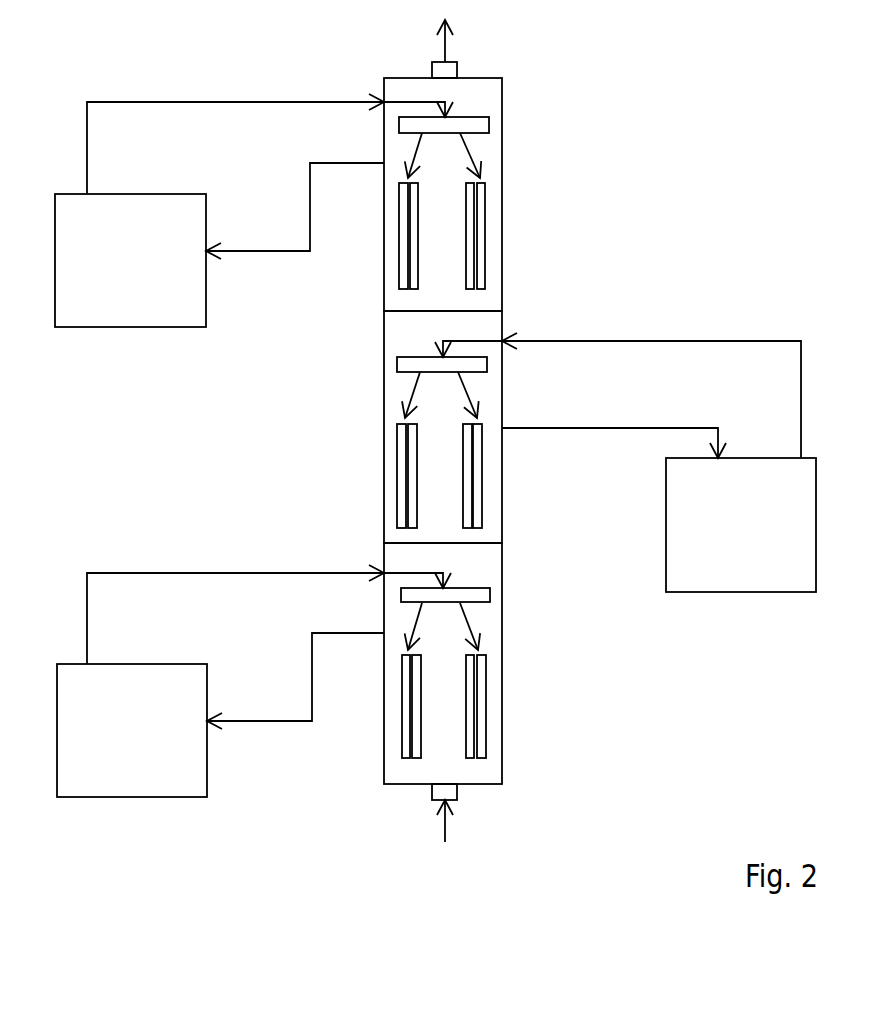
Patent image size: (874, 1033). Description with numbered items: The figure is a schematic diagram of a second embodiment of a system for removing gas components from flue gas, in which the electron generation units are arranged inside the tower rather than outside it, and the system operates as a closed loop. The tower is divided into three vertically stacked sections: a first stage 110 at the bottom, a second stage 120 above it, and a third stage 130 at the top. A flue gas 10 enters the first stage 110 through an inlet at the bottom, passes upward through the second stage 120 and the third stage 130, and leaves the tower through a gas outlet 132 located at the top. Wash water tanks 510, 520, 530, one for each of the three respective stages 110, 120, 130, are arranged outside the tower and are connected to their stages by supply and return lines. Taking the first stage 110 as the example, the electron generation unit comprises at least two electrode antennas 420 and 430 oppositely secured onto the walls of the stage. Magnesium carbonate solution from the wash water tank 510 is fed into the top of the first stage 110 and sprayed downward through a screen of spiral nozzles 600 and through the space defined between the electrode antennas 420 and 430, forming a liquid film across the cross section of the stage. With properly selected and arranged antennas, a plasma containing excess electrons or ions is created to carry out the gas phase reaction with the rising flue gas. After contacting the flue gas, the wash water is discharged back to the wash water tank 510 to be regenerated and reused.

The flue gas 10 is at (445, 831).
The first stage 110 is at (496, 771).
The second stage 120 is at (384, 430).
The third stage 130 is at (502, 235).
The gas outlet 132 is at (457, 63).
The electrode antenna 420 is at (482, 723).
The electrode antenna 430 is at (404, 727).
The wash water tank 510 is at (100, 763).
The wash water tank 520 is at (773, 533).
The wash water tank 530 is at (100, 308).
The screen of spiral nozzles 600 is at (476, 595).